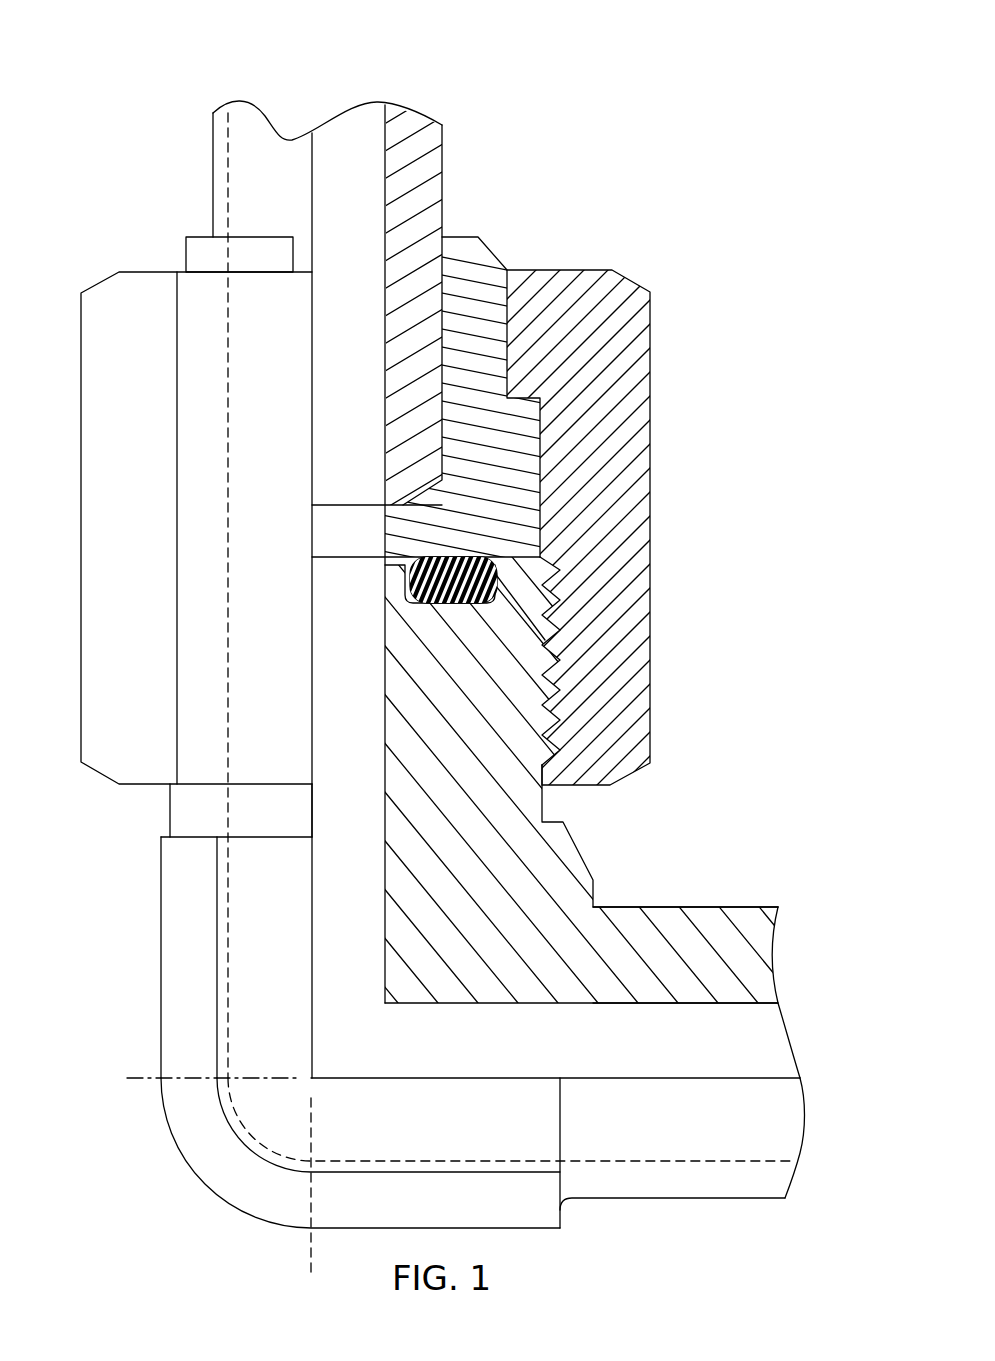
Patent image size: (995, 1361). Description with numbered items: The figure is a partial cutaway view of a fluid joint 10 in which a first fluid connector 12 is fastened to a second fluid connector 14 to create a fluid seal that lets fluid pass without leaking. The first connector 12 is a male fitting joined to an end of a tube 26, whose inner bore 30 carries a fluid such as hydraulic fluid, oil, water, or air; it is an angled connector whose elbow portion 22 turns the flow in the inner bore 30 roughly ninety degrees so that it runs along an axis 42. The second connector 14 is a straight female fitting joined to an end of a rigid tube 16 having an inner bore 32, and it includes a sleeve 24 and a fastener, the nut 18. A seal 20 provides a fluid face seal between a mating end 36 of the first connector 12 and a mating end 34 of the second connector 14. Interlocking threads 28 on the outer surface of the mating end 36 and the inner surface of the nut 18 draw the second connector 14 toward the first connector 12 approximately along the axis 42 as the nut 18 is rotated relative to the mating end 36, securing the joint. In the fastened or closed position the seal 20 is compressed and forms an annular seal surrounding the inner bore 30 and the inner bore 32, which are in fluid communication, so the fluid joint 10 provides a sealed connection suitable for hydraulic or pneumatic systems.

The fluid joint 10 is at (660, 112).
The first fluid connector 12 is at (138, 862).
The second fluid connector 14 is at (500, 132).
The rigid tube 16 is at (213, 160).
The nut 18 is at (81, 305).
The seal 20 is at (405, 573).
The elbow portion 22 is at (542, 1228).
The sleeve 24 is at (478, 237).
The tube 26 is at (755, 1182).
The threads 28 is at (570, 670).
The inner bore 30 is at (760, 1040).
The inner bore 32 is at (272, 112).
The mating end 34 is at (548, 490).
The mating end 36 is at (440, 620).
The axis 42 is at (305, 1255).